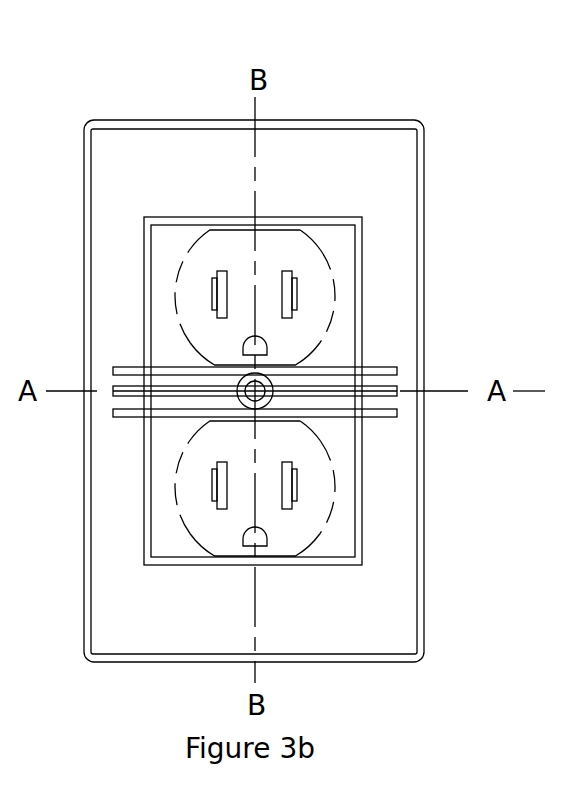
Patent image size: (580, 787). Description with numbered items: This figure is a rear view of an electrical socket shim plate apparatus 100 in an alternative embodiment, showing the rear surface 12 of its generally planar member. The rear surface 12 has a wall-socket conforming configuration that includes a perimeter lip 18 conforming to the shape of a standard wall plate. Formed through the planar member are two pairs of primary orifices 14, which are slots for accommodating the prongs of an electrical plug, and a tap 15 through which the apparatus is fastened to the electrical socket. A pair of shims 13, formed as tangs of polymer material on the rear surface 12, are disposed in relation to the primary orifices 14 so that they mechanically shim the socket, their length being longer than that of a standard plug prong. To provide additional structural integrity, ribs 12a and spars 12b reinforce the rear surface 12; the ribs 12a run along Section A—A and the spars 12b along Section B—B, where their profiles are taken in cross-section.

The electrical socket shim plate apparatus 100 is at (441, 92).
The perimeter lip 18 is at (421, 150).
The rear surface 12 is at (395, 605).
The ribs 12a is at (383, 418).
The spars 12b is at (367, 295).
The primary orifices 14 is at (290, 270).
The shims 13 is at (297, 287).
The tap 15 is at (262, 386).